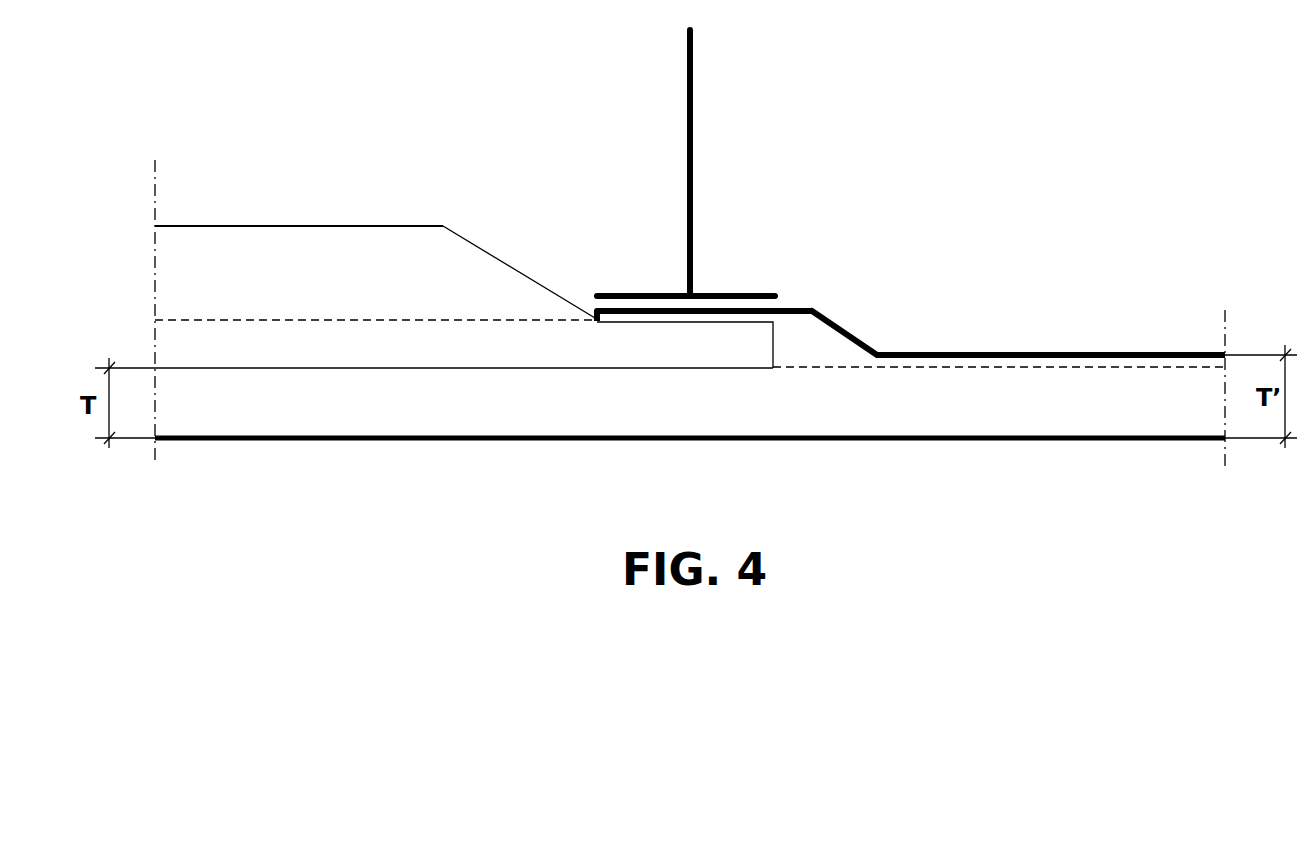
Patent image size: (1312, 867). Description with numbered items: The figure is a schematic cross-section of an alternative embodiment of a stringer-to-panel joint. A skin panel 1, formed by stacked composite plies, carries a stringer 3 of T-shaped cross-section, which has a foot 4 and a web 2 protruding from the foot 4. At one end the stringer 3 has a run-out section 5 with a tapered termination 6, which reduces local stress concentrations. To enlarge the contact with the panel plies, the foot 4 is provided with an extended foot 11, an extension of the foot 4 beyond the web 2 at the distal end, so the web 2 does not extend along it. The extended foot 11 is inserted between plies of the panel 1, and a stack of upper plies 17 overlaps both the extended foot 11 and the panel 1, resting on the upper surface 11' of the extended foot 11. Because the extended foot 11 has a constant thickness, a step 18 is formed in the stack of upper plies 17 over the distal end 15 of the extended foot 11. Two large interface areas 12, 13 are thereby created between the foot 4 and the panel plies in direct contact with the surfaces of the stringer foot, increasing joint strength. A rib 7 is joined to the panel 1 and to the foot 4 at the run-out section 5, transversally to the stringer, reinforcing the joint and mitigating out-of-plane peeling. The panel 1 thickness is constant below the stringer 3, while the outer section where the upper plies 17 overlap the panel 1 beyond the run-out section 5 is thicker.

The skin panel 1 is at (1032, 439).
The web 2 is at (223, 226).
The stringer 3 is at (363, 266).
The foot 4 is at (400, 348).
The run-out section 5 is at (516, 290).
The tapered termination 6 is at (488, 255).
The rib 7 is at (692, 118).
The extended foot 11 is at (707, 417).
The upper surface of the extended foot 11' is at (731, 440).
The interface area 12 is at (650, 307).
The interface area 13 is at (612, 368).
The distal end 15 is at (775, 358).
The stack of upper plies 17 is at (797, 342).
The step 18 is at (852, 330).